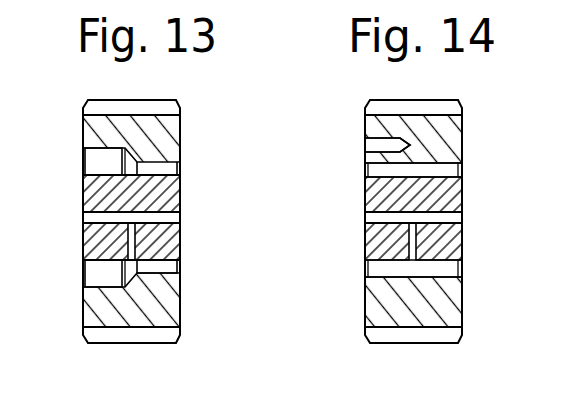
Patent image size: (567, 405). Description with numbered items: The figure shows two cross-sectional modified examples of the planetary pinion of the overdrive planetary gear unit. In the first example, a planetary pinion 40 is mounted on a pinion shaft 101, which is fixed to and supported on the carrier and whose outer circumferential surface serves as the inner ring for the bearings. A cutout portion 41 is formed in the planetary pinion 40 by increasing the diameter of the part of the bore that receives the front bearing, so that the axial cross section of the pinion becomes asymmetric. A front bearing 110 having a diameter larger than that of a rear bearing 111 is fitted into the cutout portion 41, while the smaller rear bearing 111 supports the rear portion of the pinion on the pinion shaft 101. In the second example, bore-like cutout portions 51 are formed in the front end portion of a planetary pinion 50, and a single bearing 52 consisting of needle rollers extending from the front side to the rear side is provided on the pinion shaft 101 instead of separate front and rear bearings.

In FIG. 13, the planetary pinion 40 is at (163, 142).
In FIG. 13, the cutout portion 41 is at (85, 165).
In FIG. 13, the pinion shaft 101 is at (168, 200).
In FIG. 14, the pinion shaft 101 is at (443, 205).
In FIG. 13, the front bearing 110 is at (85, 270).
In FIG. 13, the rear bearing 111 is at (162, 270).
In FIG. 14, the planetary pinion 50 is at (443, 147).
In FIG. 14, the bore-like cutout portions 51 is at (385, 146).
In FIG. 14, the single bearing 52 is at (443, 175).